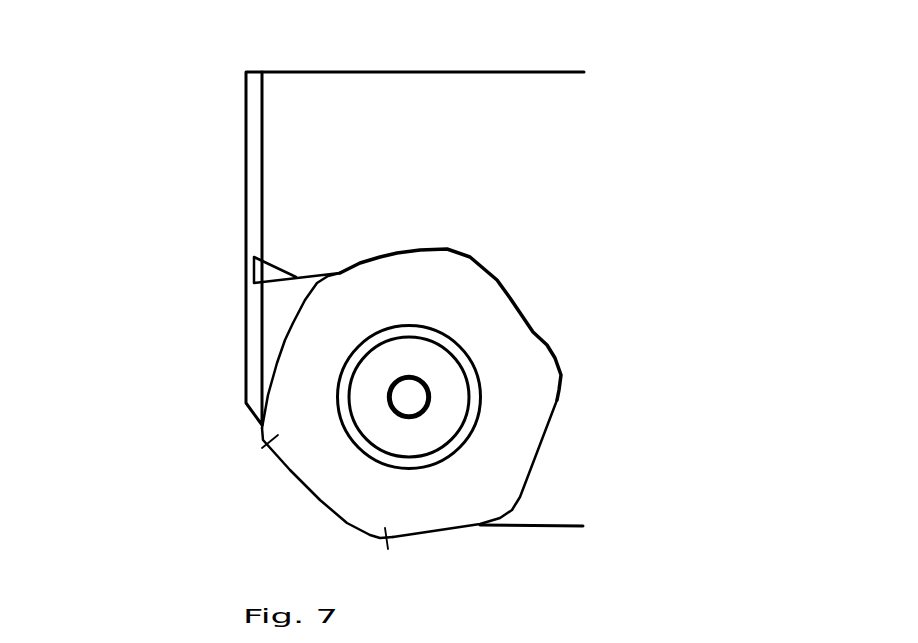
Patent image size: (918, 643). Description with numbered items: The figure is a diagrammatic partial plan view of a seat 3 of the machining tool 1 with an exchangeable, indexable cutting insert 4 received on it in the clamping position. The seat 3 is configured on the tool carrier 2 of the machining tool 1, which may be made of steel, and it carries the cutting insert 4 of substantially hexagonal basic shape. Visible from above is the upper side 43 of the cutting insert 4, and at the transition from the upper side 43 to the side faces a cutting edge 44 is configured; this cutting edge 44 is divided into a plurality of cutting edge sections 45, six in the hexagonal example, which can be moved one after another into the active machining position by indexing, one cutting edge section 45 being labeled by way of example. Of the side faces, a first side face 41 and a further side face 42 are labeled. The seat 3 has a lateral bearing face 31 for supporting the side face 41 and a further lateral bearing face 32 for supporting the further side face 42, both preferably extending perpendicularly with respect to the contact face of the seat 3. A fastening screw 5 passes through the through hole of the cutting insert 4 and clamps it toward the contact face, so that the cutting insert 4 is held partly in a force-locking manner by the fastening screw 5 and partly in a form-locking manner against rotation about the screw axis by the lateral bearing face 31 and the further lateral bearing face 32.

The machining tool 1 is at (70, 157).
The tool carrier 2 is at (493, 98).
The seat 3 is at (265, 312).
The lateral bearing face 31 is at (538, 423).
The further lateral bearing face 32 is at (398, 262).
The cutting insert 4 is at (409, 396).
The first side face 41 is at (536, 452).
The further side face 42 is at (372, 256).
The upper side 43 is at (295, 420).
The cutting edge 44 is at (273, 353).
The cutting edge section 45 is at (256, 453).
The fastening screw 5 is at (421, 356).